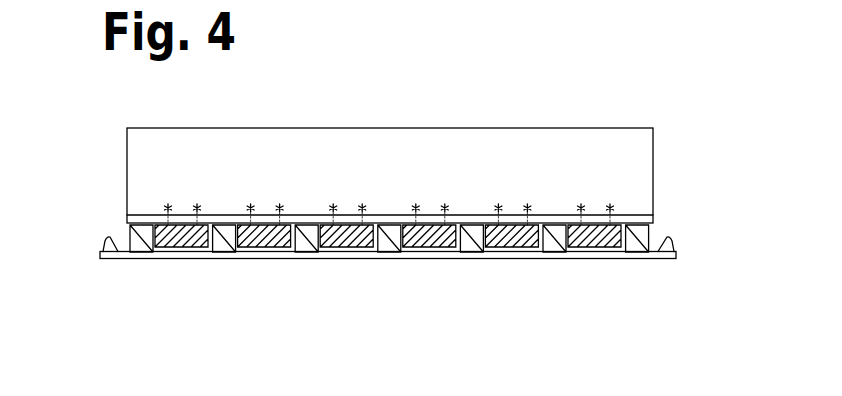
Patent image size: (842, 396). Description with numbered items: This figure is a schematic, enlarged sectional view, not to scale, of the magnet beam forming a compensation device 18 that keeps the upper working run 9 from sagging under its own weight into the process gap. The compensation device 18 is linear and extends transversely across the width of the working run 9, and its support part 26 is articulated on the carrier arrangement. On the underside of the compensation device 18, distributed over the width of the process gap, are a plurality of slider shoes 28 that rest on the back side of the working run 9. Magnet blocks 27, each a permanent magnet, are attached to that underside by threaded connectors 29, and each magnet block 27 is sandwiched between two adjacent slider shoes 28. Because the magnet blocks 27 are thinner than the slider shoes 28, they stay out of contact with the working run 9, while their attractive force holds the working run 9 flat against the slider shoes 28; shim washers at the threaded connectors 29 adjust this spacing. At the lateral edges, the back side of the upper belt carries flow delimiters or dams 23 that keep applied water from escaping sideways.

The upper working run 9 is at (173, 258).
The compensation device 18 is at (390, 145).
The lateral flow delimiters or dams 23 is at (105, 238).
The support part 26 is at (330, 146).
The magnet block 27 is at (192, 258).
The slider shoe 28 is at (463, 253).
The threaded connector 29 is at (417, 184).